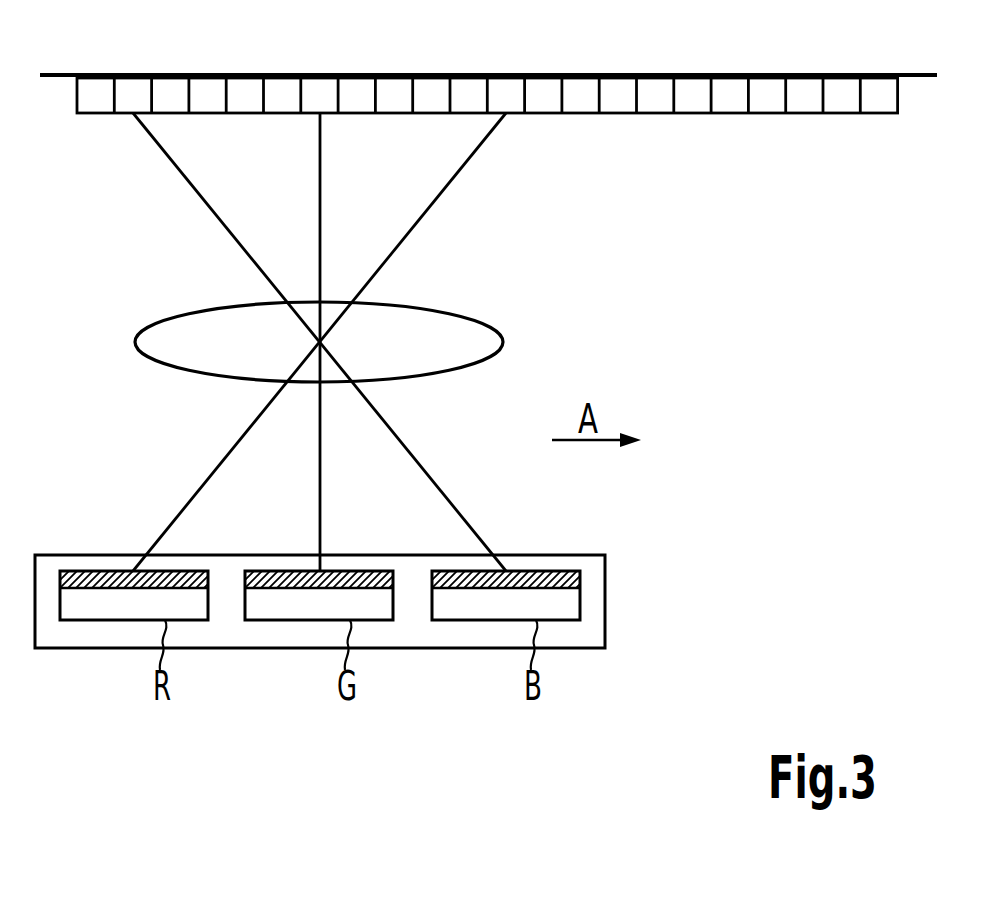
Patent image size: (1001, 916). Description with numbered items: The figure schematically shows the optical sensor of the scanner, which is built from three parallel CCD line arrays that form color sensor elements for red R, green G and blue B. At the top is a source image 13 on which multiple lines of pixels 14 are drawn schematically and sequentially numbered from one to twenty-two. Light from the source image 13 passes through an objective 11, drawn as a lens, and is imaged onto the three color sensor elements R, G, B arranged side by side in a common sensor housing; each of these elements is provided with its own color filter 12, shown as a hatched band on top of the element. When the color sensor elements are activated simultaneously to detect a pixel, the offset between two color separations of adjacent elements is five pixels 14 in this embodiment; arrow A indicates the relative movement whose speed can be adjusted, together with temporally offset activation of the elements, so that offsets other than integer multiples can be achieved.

The objective 11 is at (458, 313).
The color filter 12 is at (108, 571).
The source image 13 is at (57, 75).
The pixels 14 is at (732, 113).